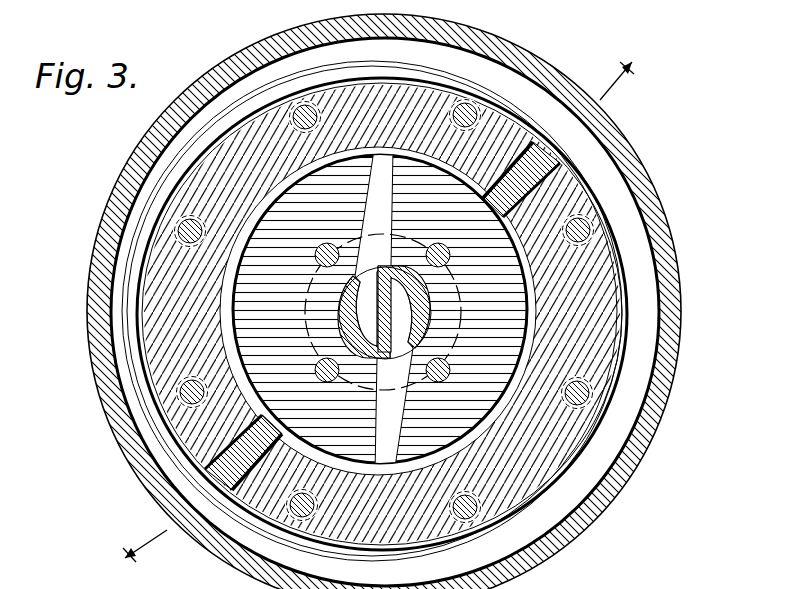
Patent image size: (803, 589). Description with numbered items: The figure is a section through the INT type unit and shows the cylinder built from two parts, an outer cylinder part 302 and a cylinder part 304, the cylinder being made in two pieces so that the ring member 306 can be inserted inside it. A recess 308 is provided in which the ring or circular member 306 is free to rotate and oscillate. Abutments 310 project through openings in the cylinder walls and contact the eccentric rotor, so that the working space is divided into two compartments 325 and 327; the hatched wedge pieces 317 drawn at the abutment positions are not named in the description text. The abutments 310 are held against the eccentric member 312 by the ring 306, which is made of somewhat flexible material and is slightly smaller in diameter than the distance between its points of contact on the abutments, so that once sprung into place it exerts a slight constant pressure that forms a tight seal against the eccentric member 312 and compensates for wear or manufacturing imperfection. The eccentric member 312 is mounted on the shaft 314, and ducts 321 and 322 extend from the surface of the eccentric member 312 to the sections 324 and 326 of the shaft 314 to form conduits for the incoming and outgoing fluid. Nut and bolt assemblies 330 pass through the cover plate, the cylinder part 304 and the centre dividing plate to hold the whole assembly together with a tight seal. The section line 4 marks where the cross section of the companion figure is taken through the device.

The cylinder part 302 is at (663, 380).
The cylinder part 304 is at (593, 307).
The ring member 306 is at (585, 180).
The recess 308 is at (630, 250).
The abutments 310 is at (541, 150).
The eccentric member 312 is at (410, 167).
The shaft 314 is at (413, 307).
The key wedge 317 is at (520, 212).
The duct 321 is at (267, 193).
The duct 322 is at (263, 417).
The shaft section 324 is at (340, 265).
The compartment 325 is at (438, 165).
The shaft section 326 is at (352, 327).
The compartment 327 is at (477, 438).
The nut and bolt assemblies 330 is at (606, 410).
The section line 4— 4 is at (380, 321).